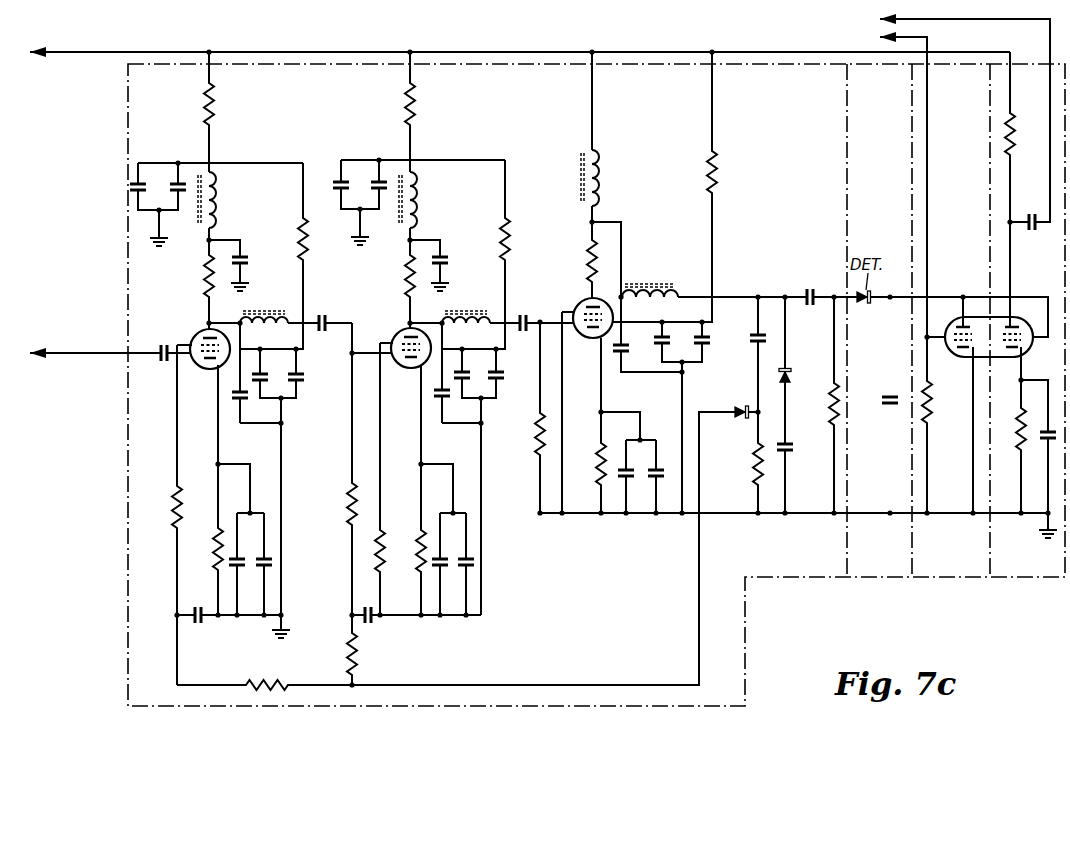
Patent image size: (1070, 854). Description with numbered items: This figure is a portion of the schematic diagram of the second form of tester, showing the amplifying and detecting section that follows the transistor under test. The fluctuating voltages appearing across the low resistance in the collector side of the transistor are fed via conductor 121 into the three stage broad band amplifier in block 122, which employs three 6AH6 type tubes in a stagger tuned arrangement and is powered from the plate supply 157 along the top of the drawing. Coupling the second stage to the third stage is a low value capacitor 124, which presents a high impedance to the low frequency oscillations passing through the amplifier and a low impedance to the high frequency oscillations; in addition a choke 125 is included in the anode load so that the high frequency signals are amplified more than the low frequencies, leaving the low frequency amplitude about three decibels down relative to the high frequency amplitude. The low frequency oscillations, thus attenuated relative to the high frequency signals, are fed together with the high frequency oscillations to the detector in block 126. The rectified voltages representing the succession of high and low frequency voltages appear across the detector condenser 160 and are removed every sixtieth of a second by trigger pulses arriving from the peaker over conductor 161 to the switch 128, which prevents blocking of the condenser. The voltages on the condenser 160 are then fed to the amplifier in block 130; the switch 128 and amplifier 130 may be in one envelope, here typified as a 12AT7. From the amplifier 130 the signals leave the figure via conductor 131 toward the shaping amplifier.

The conductor 121 is at (96, 352).
The three stage broad band amplifier 122 is at (511, 721).
The low value capacitor 124 is at (528, 321).
The choke 125 is at (578, 178).
The detector 126 is at (869, 592).
The switch 128 is at (952, 583).
The amplifier 130 is at (1055, 585).
The conductor 131 is at (1033, 19).
The plate supply 157 is at (80, 62).
The detector condenser 160 is at (898, 396).
The conductor 161 is at (913, 34).